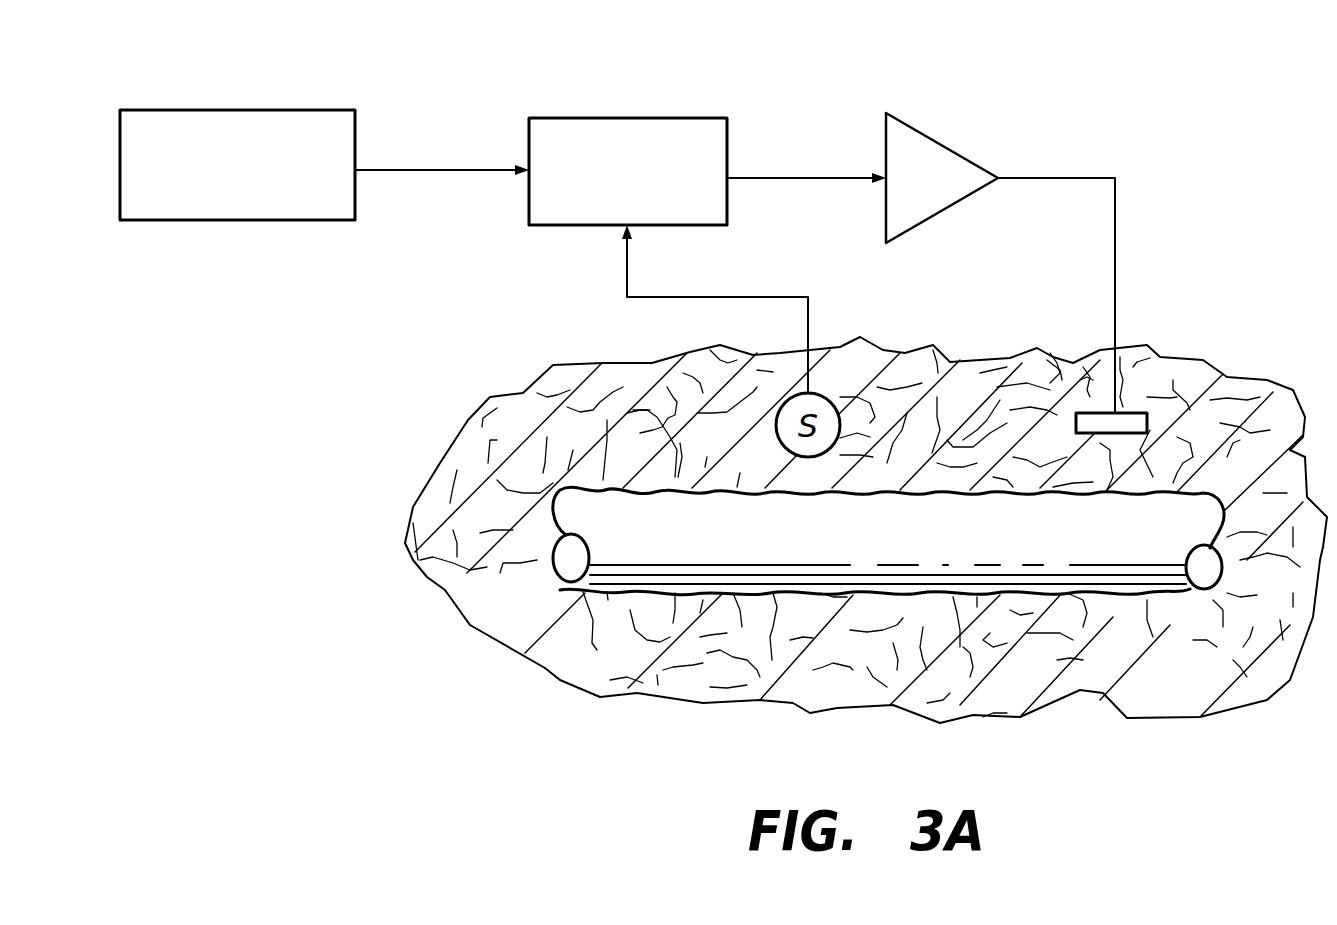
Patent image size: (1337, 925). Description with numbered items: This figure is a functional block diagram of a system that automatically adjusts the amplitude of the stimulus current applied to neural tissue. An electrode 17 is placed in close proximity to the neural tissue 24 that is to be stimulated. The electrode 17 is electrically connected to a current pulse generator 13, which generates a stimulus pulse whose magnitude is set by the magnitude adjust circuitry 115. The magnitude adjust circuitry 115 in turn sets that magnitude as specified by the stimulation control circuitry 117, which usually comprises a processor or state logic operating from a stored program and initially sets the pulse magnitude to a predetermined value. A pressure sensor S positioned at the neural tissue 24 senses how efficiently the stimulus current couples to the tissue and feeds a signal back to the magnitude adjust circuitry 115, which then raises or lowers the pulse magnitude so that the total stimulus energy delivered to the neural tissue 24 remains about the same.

The stimulation control circuitry 117 is at (235, 110).
The magnitude adjust circuitry 115 is at (627, 118).
The current pulse generator 13 is at (940, 143).
The electrode 17 is at (1137, 413).
The neural tissue 24 is at (1120, 592).